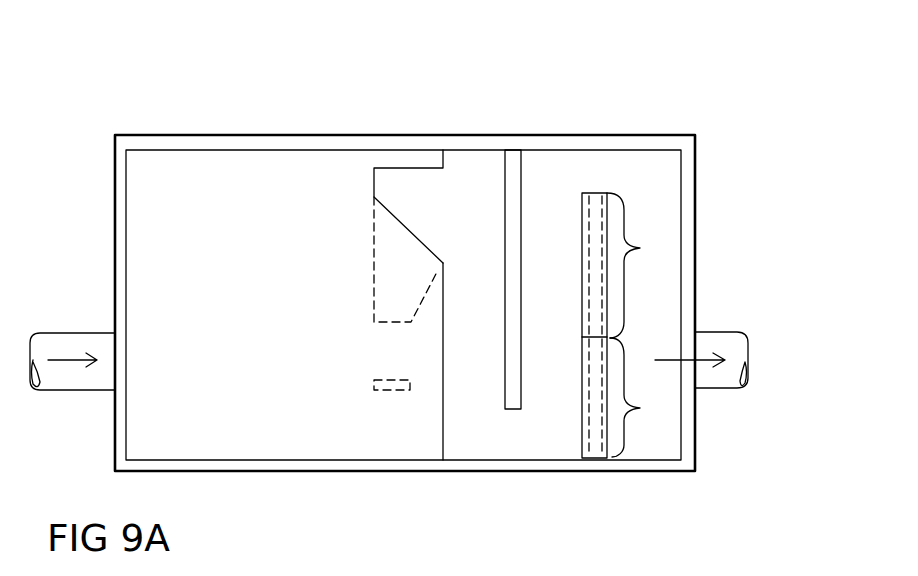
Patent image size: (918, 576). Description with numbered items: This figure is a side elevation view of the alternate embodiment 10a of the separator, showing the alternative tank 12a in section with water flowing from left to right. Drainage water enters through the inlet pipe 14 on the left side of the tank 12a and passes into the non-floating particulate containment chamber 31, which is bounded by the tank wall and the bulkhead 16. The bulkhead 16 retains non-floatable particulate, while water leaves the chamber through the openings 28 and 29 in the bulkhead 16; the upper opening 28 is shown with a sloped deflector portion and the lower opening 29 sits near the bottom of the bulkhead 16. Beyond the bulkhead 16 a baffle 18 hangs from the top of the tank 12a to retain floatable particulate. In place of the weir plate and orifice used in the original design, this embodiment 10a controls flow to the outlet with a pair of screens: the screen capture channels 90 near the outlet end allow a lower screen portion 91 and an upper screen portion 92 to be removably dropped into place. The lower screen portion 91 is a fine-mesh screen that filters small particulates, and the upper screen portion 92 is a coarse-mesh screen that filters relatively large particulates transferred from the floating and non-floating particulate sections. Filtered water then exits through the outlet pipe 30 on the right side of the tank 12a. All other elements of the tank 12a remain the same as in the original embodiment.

The alternate embodiment 10a is at (158, 72).
The alternative tank 12a is at (215, 135).
The inlet pipe 14 is at (77, 333).
The bulkhead 16 is at (443, 418).
The baffle 18 is at (523, 184).
The opening 28 is at (393, 217).
The opening 29 is at (394, 392).
The outlet pipe 30 is at (731, 332).
The non-floating particulate containment chamber 31 is at (242, 366).
The screen capture channels 90 is at (580, 432).
The lower screen portion 91 is at (642, 408).
The upper screen portion 92 is at (642, 248).